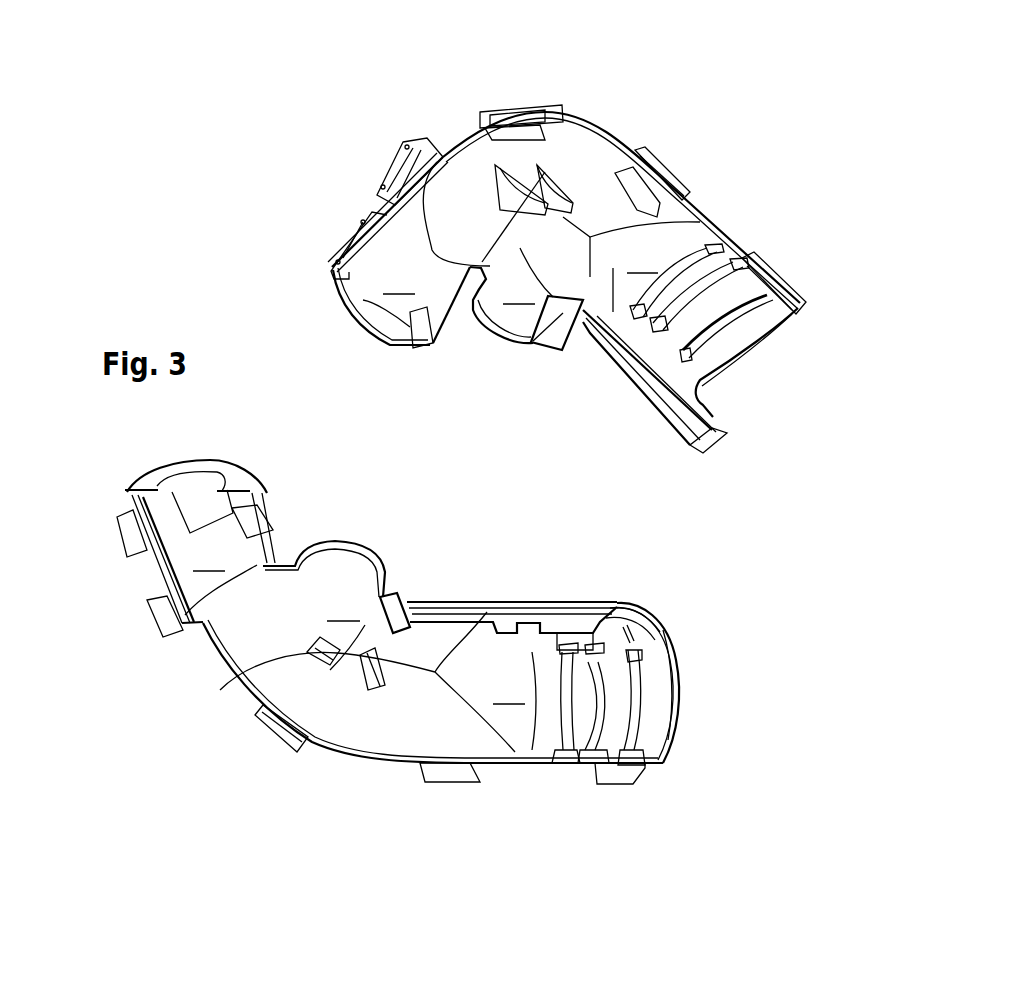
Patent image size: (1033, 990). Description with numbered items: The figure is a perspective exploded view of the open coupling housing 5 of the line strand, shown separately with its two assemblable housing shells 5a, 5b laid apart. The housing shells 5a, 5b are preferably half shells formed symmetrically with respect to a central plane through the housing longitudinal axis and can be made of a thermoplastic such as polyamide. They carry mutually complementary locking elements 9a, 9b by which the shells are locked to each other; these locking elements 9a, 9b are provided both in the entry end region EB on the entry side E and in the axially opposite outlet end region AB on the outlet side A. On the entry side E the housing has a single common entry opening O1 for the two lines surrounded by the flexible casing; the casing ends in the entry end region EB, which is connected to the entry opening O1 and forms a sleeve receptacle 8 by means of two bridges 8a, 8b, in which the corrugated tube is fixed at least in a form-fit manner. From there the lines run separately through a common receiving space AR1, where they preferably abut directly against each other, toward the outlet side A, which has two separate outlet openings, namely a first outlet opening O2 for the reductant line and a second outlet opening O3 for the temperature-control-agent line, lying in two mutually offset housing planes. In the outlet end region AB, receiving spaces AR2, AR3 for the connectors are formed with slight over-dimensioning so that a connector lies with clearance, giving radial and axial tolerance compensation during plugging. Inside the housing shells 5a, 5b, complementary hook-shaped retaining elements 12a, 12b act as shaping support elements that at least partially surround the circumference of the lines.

The locking element 9b is at (535, 110).
The hook-shaped retaining element 12b is at (500, 170).
The sleeve receptacle 8 is at (666, 468).
The bridge 8a is at (733, 247).
The bridge 8b is at (675, 489).
The coupling housing 5 is at (564, 469).
The housing shell 5a is at (500, 655).
The housing shell 5b is at (617, 283).
The locking element 9a is at (125, 535).
The hook-shaped retaining element 12a is at (322, 660).
The common receiving space AR1 is at (575, 476).
The receiving space for connector AR2 is at (228, 558).
The receiving space for connector AR3 is at (431, 450).
The entry opening O1 is at (767, 362).
The first outlet opening O2 is at (500, 336).
The second outlet opening O3 is at (380, 303).
The outlet side A is at (393, 360).
The entry side E is at (770, 388).
The outlet end region AB is at (340, 106).
The entry end region EB is at (870, 247).